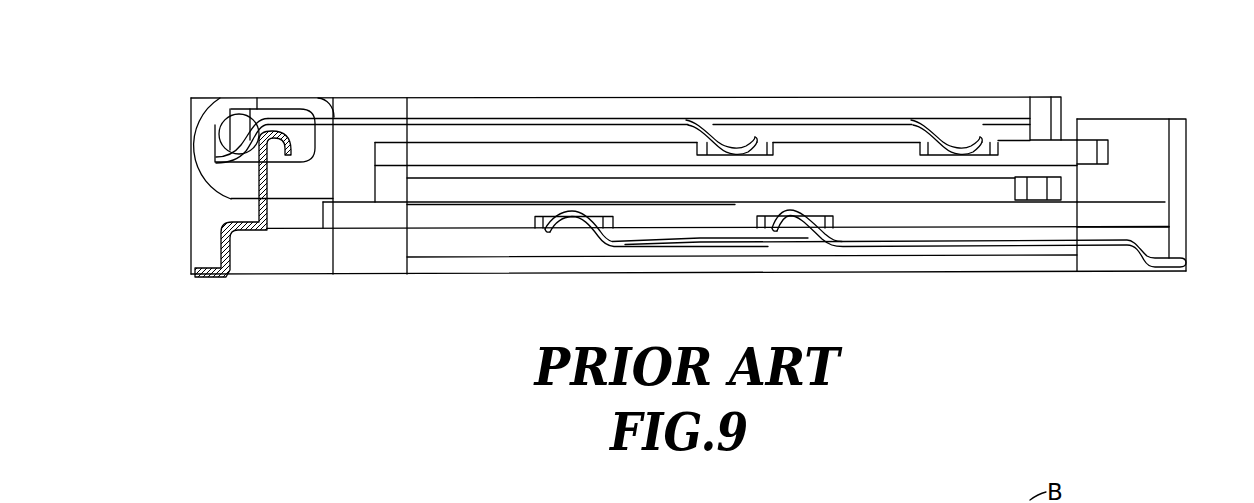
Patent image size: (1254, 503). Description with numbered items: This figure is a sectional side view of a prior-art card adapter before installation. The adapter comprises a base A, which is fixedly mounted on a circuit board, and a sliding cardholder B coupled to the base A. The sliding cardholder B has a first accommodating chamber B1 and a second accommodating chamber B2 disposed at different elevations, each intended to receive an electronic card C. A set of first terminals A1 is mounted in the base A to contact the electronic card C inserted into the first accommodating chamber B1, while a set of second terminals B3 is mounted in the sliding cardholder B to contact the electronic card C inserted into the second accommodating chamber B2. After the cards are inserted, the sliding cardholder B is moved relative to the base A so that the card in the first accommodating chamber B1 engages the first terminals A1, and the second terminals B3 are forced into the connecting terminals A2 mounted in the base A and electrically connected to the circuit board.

The base A is at (1023, 283).
The first terminals A1 is at (572, 217).
The connecting terminals A2 is at (241, 231).
The sliding cardholder B is at (972, 88).
The first accommodating chamber B1 is at (1090, 188).
The second accommodating chamber B2 is at (1035, 175).
The second terminals B3 is at (710, 121).
The electronic card C is at (841, 153).